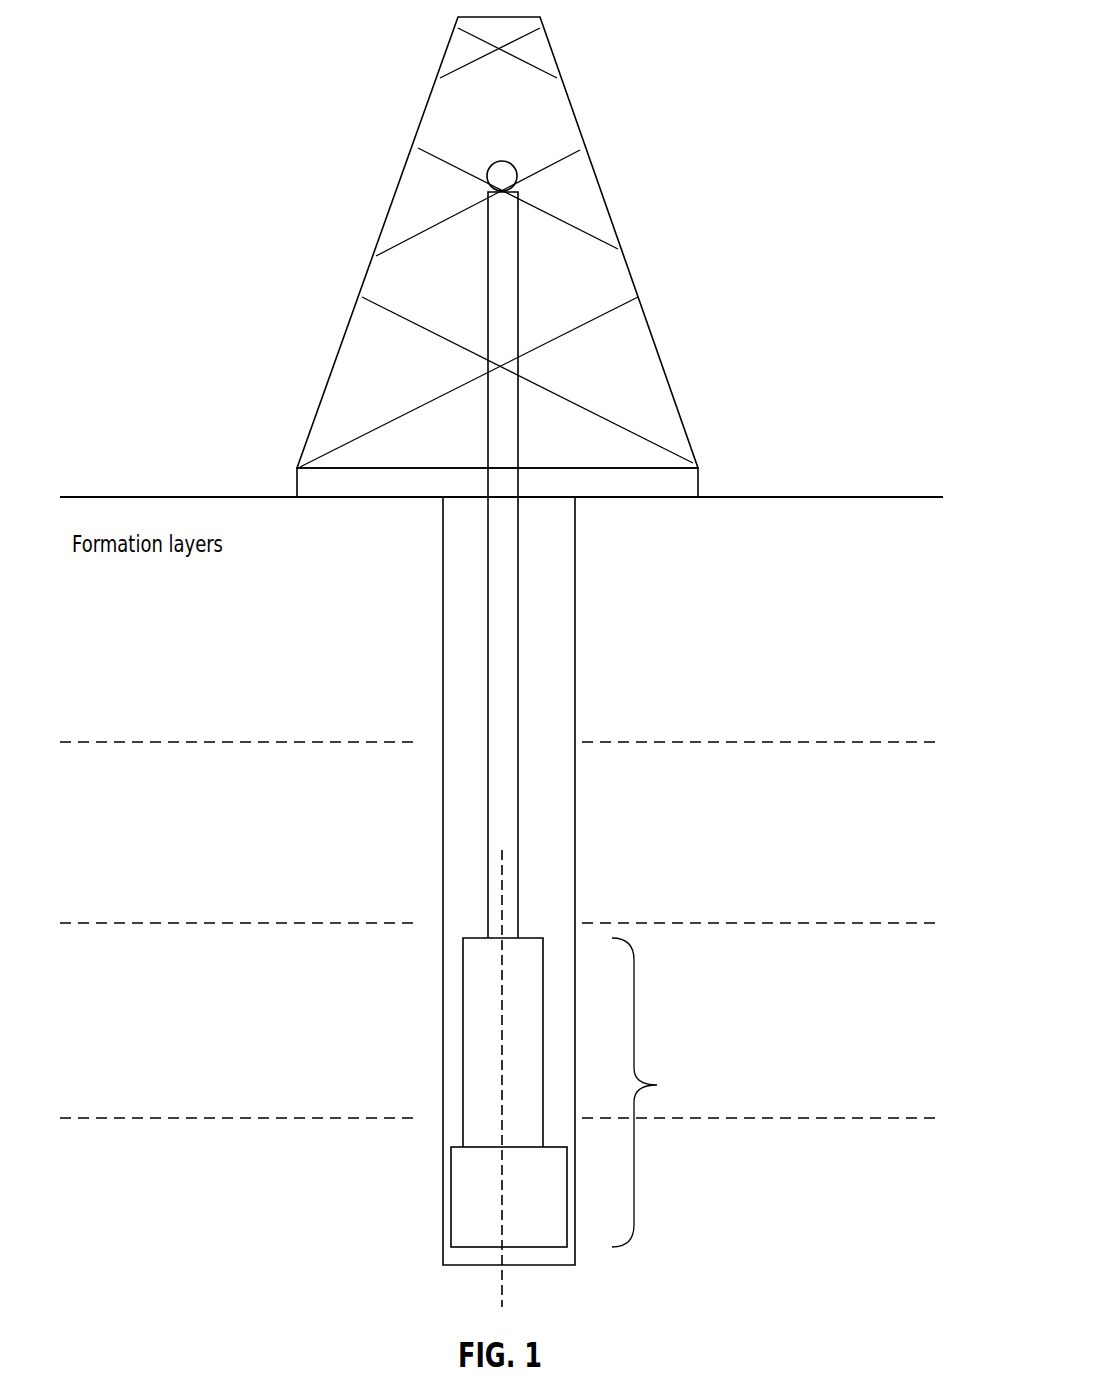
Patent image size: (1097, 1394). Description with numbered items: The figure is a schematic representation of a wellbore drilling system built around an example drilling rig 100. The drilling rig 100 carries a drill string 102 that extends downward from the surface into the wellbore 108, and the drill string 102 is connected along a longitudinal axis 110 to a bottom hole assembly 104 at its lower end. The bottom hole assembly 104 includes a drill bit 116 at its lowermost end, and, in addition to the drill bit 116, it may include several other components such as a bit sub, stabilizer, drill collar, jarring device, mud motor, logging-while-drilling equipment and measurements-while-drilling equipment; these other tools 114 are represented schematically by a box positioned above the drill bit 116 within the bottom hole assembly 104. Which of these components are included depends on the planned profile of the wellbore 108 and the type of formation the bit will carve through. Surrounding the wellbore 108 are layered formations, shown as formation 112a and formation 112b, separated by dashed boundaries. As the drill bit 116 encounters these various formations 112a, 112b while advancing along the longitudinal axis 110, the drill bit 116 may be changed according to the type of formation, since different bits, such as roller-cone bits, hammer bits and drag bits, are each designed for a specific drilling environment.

The drilling rig 100 is at (588, 73).
The drill string 102 is at (508, 697).
The bottom hole assembly 104 is at (576, 1092).
The wellbore 108 is at (593, 552).
The longitudinal axis 110 is at (502, 1228).
The formation 112a is at (142, 562).
The formation 112b is at (142, 562).
The tools 114 is at (475, 1033).
The drill bit 116 is at (463, 1185).